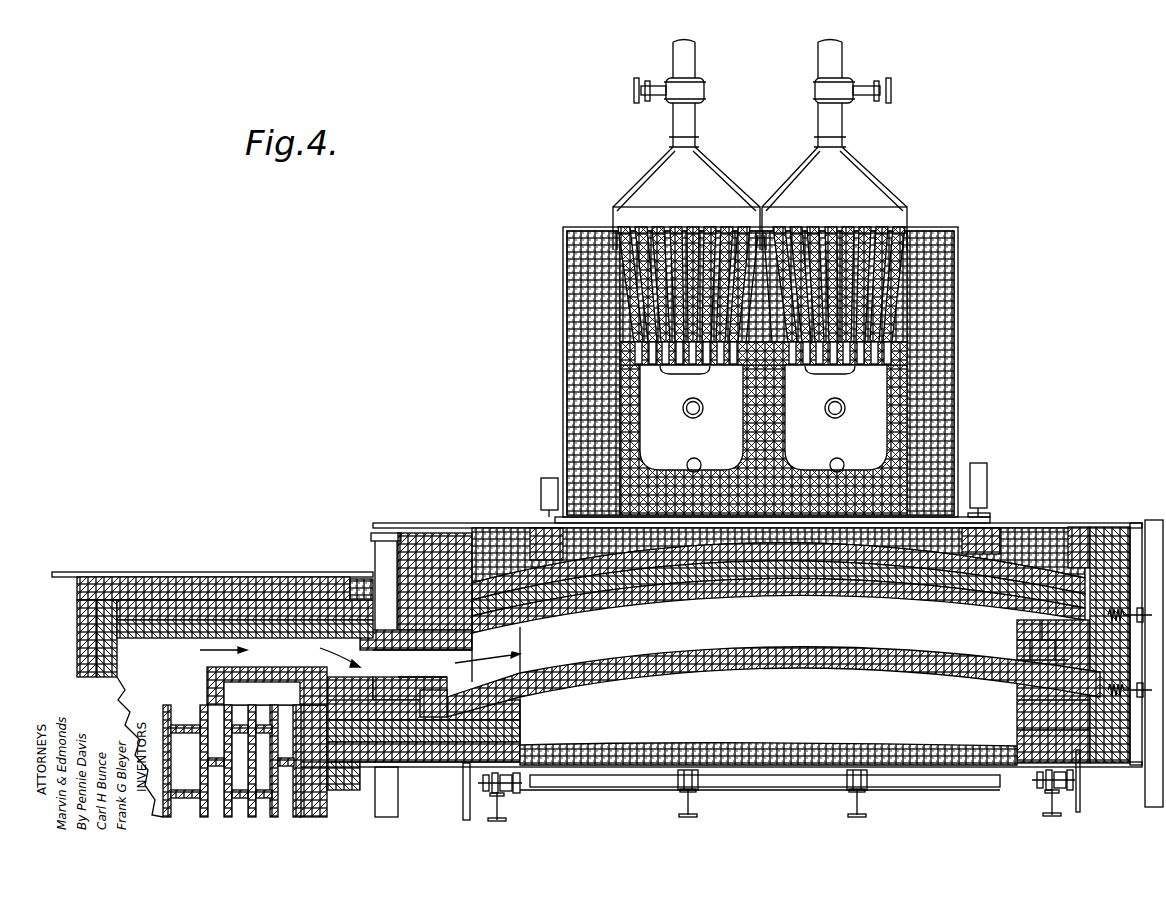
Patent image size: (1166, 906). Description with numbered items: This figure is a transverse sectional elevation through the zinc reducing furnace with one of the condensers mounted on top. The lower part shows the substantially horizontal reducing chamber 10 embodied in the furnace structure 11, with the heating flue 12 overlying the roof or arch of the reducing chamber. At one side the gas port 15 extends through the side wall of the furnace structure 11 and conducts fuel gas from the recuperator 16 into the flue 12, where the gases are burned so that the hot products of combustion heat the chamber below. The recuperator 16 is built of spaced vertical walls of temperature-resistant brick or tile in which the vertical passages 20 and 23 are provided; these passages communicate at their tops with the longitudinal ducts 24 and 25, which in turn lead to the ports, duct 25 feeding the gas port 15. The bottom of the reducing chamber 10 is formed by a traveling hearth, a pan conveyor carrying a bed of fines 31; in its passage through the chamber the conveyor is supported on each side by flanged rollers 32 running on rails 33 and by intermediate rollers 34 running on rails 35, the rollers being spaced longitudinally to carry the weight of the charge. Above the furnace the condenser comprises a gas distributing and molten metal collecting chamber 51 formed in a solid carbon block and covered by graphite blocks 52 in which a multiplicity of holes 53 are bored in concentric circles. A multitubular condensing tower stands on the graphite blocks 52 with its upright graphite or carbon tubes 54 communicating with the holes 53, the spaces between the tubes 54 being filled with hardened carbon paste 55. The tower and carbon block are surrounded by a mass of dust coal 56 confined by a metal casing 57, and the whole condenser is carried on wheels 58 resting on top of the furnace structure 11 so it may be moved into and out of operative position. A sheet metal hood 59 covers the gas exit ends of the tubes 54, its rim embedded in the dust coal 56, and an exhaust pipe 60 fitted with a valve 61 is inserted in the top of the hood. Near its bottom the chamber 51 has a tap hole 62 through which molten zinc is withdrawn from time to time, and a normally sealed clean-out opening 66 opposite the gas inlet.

The reducing chamber 10 is at (768, 731).
The furnace structure 11 is at (1080, 523).
The heating flue 12 is at (652, 645).
The gas port 15 is at (458, 682).
The recuperator 16 is at (170, 590).
The vertical passage 20 is at (360, 798).
The vertical passage 23 is at (176, 699).
The longitudinal duct 24 is at (267, 686).
The longitudinal duct 25 is at (250, 660).
The bed of fines 31 is at (612, 776).
The flanged roller 32 is at (482, 786).
The rail 33 is at (504, 804).
The intermediate roller 34 is at (680, 792).
The rail 35 is at (694, 806).
The gas distributing and molten metal collecting chamber 51 is at (763, 417).
The graphite block 52 is at (620, 351).
The hole 53 is at (757, 379).
The upright tube 54 is at (625, 290).
The hardened carbon paste 55 is at (640, 262).
The dust coal 56 is at (945, 305).
The metal casing 57 is at (930, 349).
The wheel 58 is at (990, 489).
The sheet metal hood 59 is at (655, 175).
The exhaust pipe 60 is at (820, 47).
The valve 61 is at (640, 86).
The tap hole 62 is at (698, 461).
The clean-out opening 66 is at (703, 406).